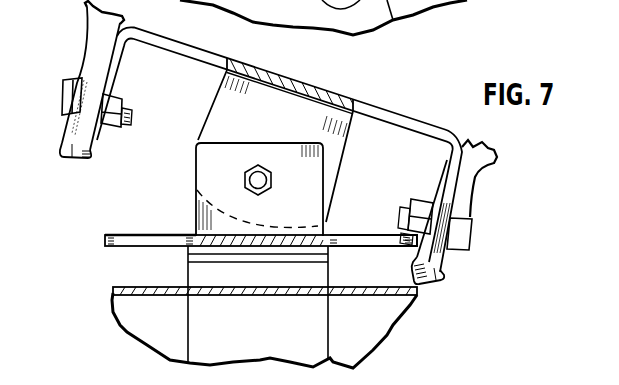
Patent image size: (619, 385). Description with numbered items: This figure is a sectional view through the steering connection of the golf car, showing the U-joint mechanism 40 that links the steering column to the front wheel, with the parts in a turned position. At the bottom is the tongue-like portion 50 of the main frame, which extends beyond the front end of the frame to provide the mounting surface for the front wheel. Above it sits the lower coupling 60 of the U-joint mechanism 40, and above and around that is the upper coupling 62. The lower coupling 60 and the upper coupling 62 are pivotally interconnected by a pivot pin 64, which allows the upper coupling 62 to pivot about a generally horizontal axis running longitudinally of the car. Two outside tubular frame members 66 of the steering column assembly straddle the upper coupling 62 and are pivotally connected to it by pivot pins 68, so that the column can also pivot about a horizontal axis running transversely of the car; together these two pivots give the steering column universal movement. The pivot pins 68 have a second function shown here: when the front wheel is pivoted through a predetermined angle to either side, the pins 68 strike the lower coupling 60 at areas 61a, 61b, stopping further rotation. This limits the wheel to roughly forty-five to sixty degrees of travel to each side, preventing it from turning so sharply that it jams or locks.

The U-joint mechanism 40 is at (463, 127).
The tongue-like portion 50 is at (123, 288).
The lower coupling 60 is at (205, 164).
The area 61a is at (123, 232).
The area 61b is at (391, 236).
The upper coupling 62 is at (371, 95).
The pivot pin 64 is at (259, 168).
The tubular frame members 66 is at (93, 17).
The pivot pins 68 is at (73, 92).